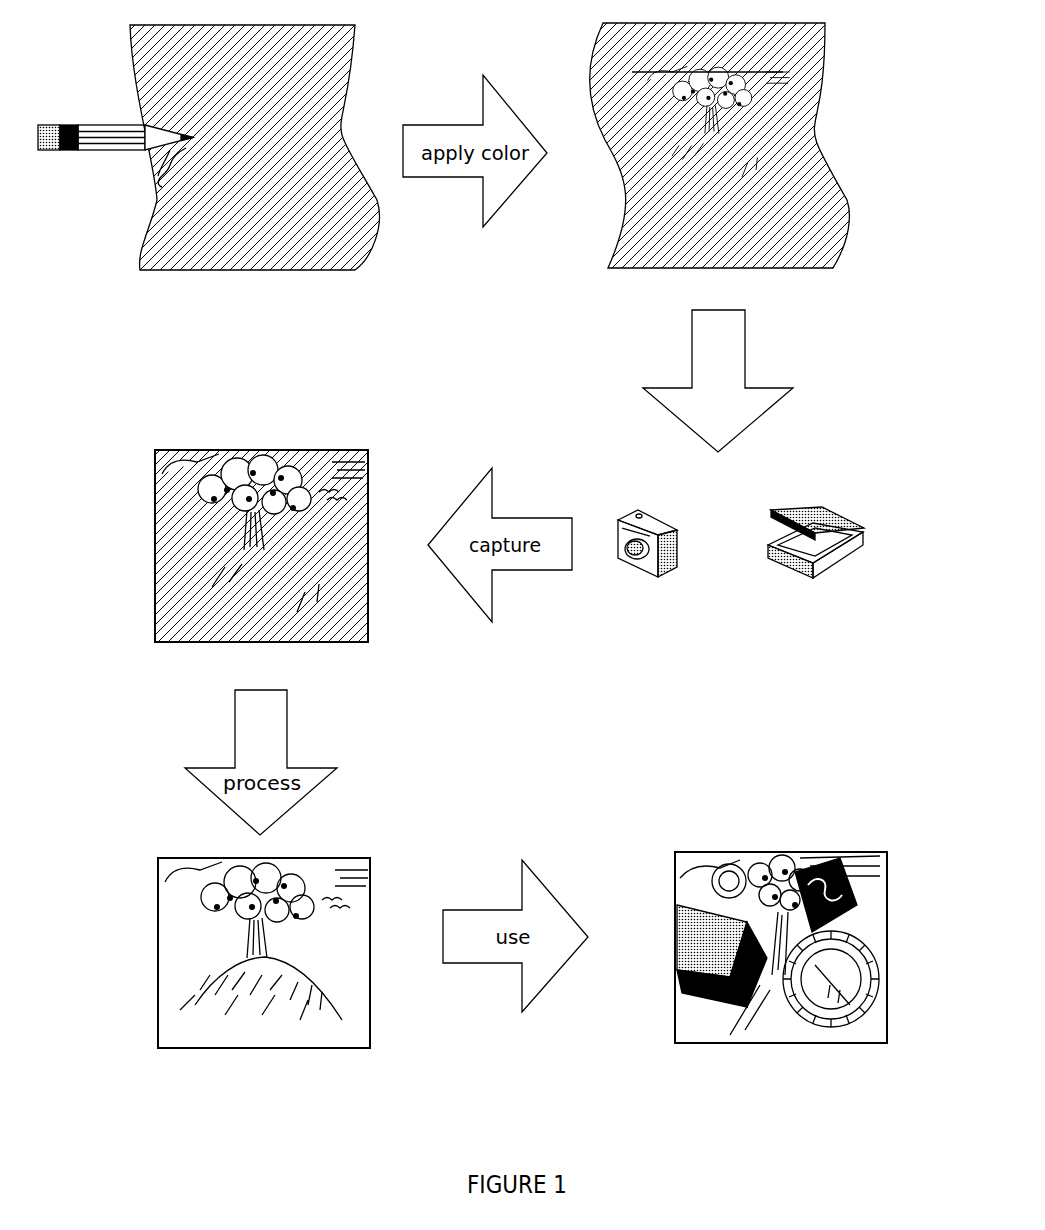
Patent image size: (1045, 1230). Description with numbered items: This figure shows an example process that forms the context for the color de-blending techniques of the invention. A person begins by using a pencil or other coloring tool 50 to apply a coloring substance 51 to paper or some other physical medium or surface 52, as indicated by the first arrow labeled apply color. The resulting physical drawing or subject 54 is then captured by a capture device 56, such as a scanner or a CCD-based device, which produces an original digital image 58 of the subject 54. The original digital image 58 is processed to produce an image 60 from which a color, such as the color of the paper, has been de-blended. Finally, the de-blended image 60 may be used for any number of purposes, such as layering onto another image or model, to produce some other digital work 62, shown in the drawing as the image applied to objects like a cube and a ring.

The coloring tool 50 is at (68, 120).
The coloring substance 51 is at (158, 186).
The physical medium or surface 52 is at (390, 55).
The physical drawing or subject 54 is at (873, 46).
The capture device 56 is at (745, 631).
The original digital image 58 is at (405, 476).
The de-blended image 60 is at (408, 881).
The digital work 62 is at (926, 876).